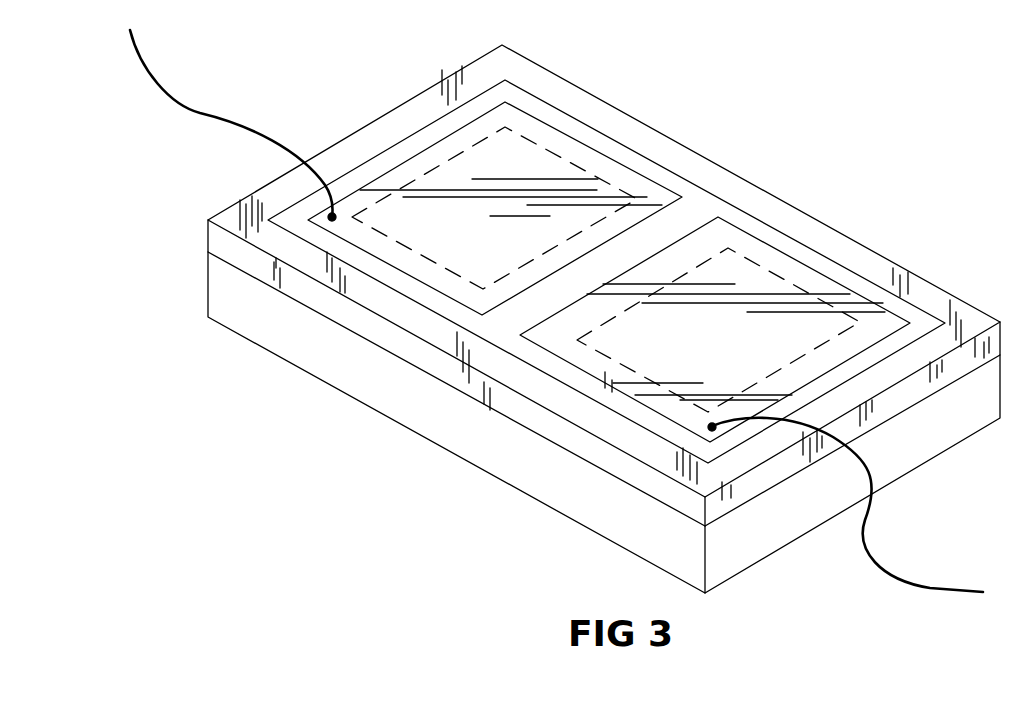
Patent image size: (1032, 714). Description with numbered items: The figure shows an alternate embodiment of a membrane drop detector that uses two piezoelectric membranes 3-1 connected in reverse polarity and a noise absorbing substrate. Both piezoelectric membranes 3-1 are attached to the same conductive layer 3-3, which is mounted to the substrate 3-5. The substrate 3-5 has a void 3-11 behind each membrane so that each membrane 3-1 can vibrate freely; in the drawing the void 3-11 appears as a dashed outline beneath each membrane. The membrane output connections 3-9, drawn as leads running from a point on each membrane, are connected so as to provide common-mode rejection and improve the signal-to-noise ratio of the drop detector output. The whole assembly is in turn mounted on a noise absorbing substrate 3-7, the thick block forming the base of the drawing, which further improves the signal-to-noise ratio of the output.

The piezoelectric membrane 3-1 is at (528, 131).
The conductive layer 3-3 is at (688, 198).
The substrate 3-5 is at (287, 193).
The noise absorbing substrate 3-7 is at (368, 378).
The membrane output connection 3-9 is at (284, 122).
The void 3-11 is at (462, 158).